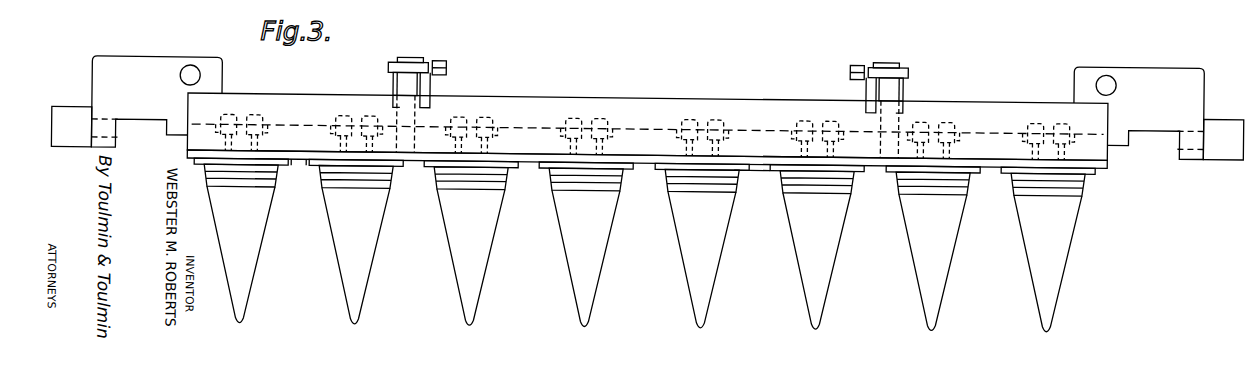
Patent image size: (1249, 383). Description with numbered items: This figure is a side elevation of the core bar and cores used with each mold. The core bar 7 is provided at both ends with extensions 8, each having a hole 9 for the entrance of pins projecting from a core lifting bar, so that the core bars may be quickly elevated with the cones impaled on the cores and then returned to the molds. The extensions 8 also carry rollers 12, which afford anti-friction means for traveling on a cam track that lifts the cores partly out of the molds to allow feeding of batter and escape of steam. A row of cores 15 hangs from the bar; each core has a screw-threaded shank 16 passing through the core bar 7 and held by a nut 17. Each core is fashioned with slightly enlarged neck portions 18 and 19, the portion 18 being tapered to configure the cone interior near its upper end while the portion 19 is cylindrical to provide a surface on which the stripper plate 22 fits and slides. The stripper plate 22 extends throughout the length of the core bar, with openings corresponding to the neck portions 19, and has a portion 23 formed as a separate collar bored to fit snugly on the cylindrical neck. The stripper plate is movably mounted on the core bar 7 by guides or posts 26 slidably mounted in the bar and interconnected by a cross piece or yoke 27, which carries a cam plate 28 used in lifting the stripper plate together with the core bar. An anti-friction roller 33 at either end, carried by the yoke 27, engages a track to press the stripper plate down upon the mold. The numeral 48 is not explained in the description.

The core bar 7 is at (565, 93).
The extensions 8 is at (163, 56).
The holes 9 is at (195, 64).
The rollers 12 is at (85, 98).
The cores 15 is at (340, 271).
The screw-threaded shanks 16 is at (350, 116).
The nuts 17 is at (337, 131).
The neck portion 18 is at (235, 178).
The neck portion 19 is at (262, 168).
The stripper plate 22 is at (651, 155).
The collar 23 is at (306, 167).
The guides or posts 26 is at (393, 80).
The cross piece or yoke 27 is at (430, 80).
The cam plate 28 is at (442, 58).
The anti-friction roller 33 is at (407, 55).
The cup edge 48 is at (787, 178).